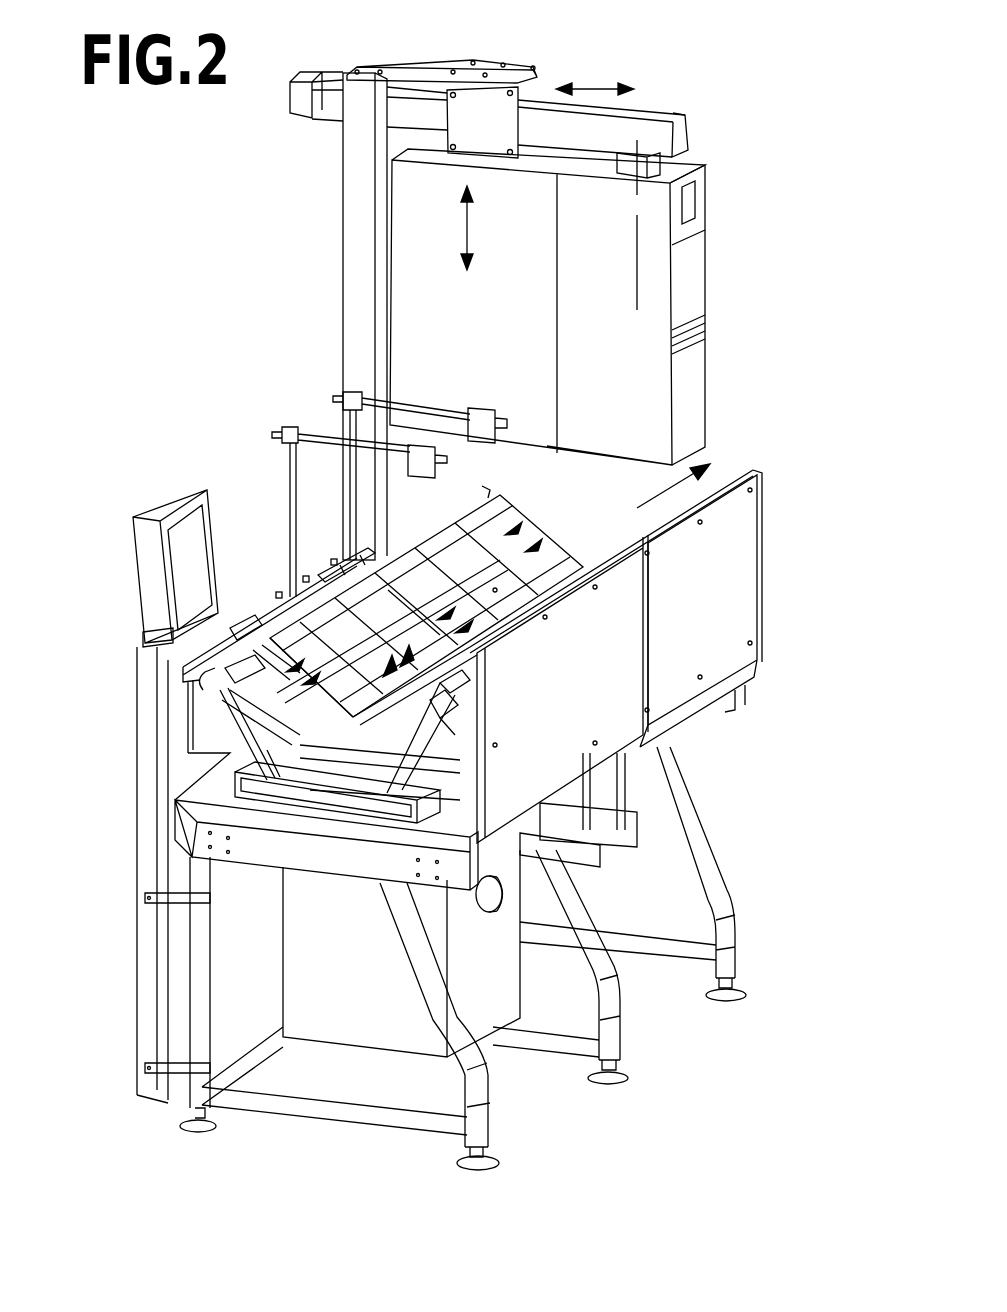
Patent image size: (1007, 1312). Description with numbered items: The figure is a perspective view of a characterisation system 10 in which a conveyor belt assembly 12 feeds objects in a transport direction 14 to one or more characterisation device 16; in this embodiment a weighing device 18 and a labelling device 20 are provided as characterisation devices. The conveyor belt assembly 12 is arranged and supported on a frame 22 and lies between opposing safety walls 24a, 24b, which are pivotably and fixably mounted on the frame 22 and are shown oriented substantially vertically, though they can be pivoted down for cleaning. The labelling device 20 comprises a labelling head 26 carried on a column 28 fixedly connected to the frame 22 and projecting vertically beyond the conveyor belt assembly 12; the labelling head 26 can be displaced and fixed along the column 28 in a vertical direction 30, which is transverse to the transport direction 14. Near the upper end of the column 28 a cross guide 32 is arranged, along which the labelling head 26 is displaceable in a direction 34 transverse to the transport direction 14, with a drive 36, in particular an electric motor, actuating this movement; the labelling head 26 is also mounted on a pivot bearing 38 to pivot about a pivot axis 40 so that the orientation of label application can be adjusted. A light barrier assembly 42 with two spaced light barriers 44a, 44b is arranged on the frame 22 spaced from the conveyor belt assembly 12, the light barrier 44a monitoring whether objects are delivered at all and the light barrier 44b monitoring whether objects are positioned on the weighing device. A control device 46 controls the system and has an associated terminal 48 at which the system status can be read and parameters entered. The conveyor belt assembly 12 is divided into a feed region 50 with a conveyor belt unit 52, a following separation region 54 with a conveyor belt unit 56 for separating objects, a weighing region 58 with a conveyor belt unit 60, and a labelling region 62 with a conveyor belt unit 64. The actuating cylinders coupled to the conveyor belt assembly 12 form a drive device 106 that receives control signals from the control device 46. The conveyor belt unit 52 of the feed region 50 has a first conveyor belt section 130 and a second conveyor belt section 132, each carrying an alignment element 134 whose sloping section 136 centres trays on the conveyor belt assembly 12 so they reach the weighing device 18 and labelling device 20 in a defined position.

The characterisation system 10 is at (756, 223).
The conveyor belt assembly 12 is at (440, 775).
The transport direction 14 is at (657, 490).
The characterisation device 16 is at (722, 178).
The weighing device 18 is at (372, 575).
The labelling device 20 is at (718, 272).
The frame 22 is at (745, 912).
The safety wall 24a is at (205, 653).
The safety wall 24b is at (733, 585).
The labelling head 26 is at (692, 310).
The column 28 is at (343, 200).
The direction/contrary direction 30 is at (462, 230).
The cross guide 32 is at (648, 110).
The direction/contrary direction 34 is at (600, 84).
The drive 36 is at (336, 78).
The pivot bearing 38 is at (688, 135).
The pivot axis 40 is at (632, 253).
The light barrier assembly 42 is at (322, 422).
The light barrier 44a is at (422, 448).
The light barrier 44b is at (487, 420).
The control device 46 is at (482, 1007).
The terminal 48 is at (167, 503).
The feed region 50 is at (258, 650).
The conveyor belt unit 52 is at (310, 637).
The separation region 54 is at (462, 690).
The conveyor belt unit 56 is at (452, 710).
The weighing region 58 is at (490, 643).
The conveyor belt unit 60 is at (538, 620).
The labelling region 62 is at (522, 514).
The conveyor belt unit 64 is at (546, 552).
The drive device 106 is at (215, 770).
The first conveyor belt section 130 is at (267, 680).
The second conveyor belt section 132 is at (310, 707).
The alignment element 134 is at (230, 633).
The sloping section 136 is at (250, 662).